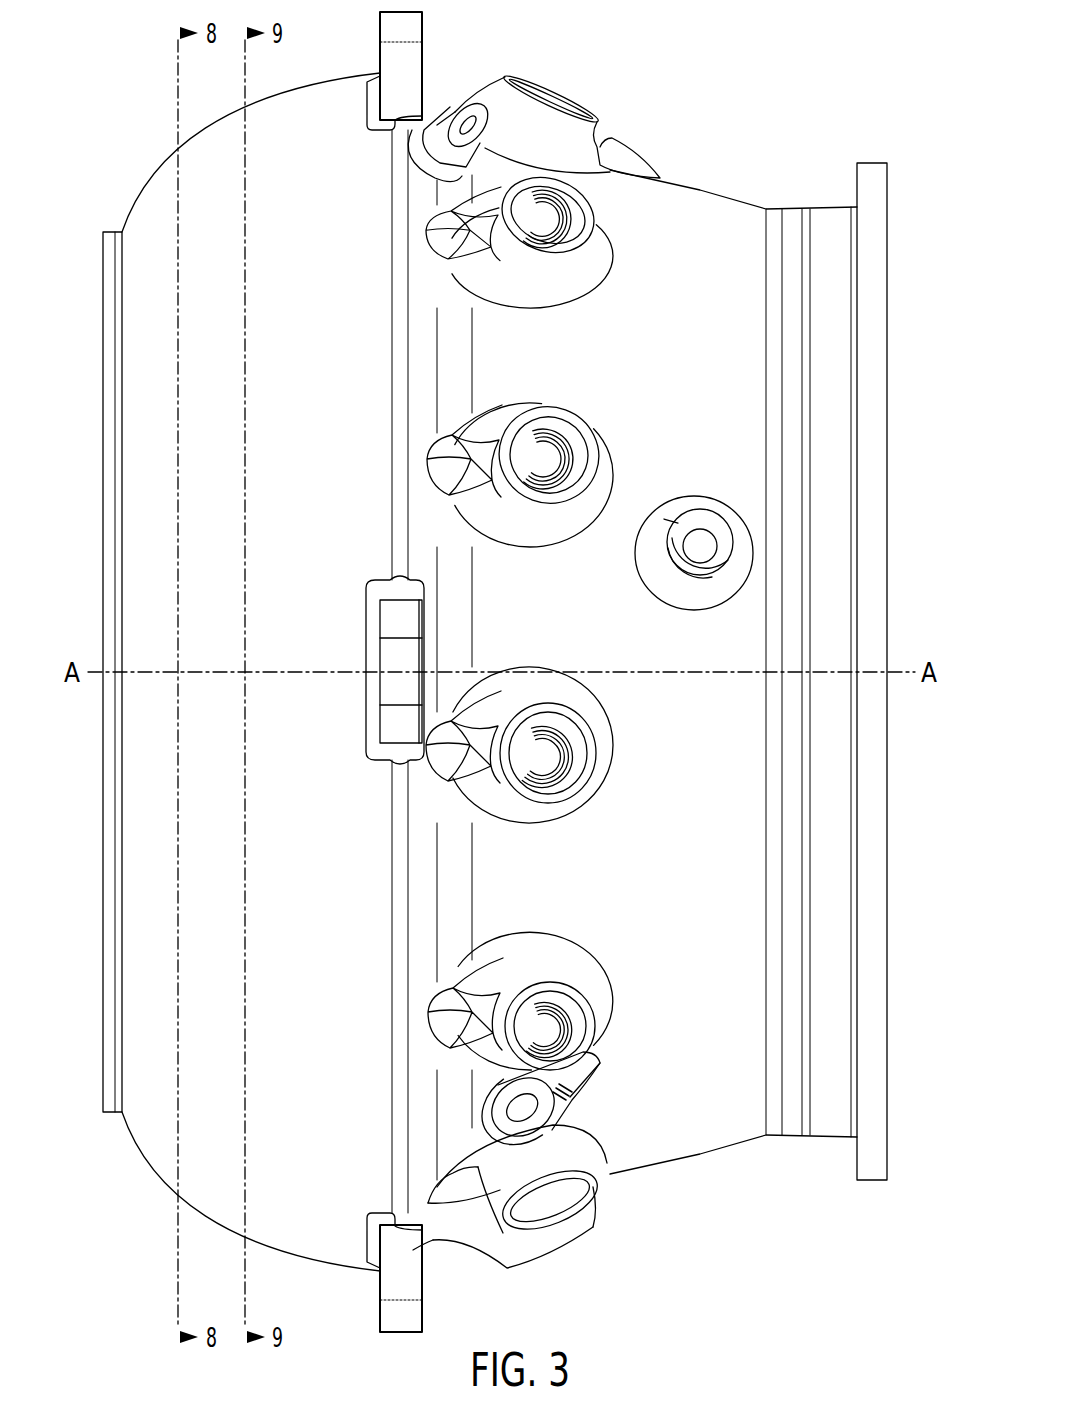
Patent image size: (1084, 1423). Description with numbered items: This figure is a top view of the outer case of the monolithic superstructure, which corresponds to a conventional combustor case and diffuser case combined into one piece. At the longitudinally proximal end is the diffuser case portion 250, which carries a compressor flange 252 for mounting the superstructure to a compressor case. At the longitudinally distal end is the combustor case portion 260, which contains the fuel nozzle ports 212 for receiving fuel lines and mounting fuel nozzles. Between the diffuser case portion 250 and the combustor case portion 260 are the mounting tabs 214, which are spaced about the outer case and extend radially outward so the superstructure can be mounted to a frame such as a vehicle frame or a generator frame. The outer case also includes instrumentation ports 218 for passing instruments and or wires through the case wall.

The diffuser case portion 250 is at (158, 160).
The compressor flange 252 is at (108, 232).
The combustor case portion 260 is at (742, 198).
The mounting tab 214 is at (390, 627).
The fuel nozzle port 212 is at (598, 122).
The instrumentation port 218 is at (710, 525).